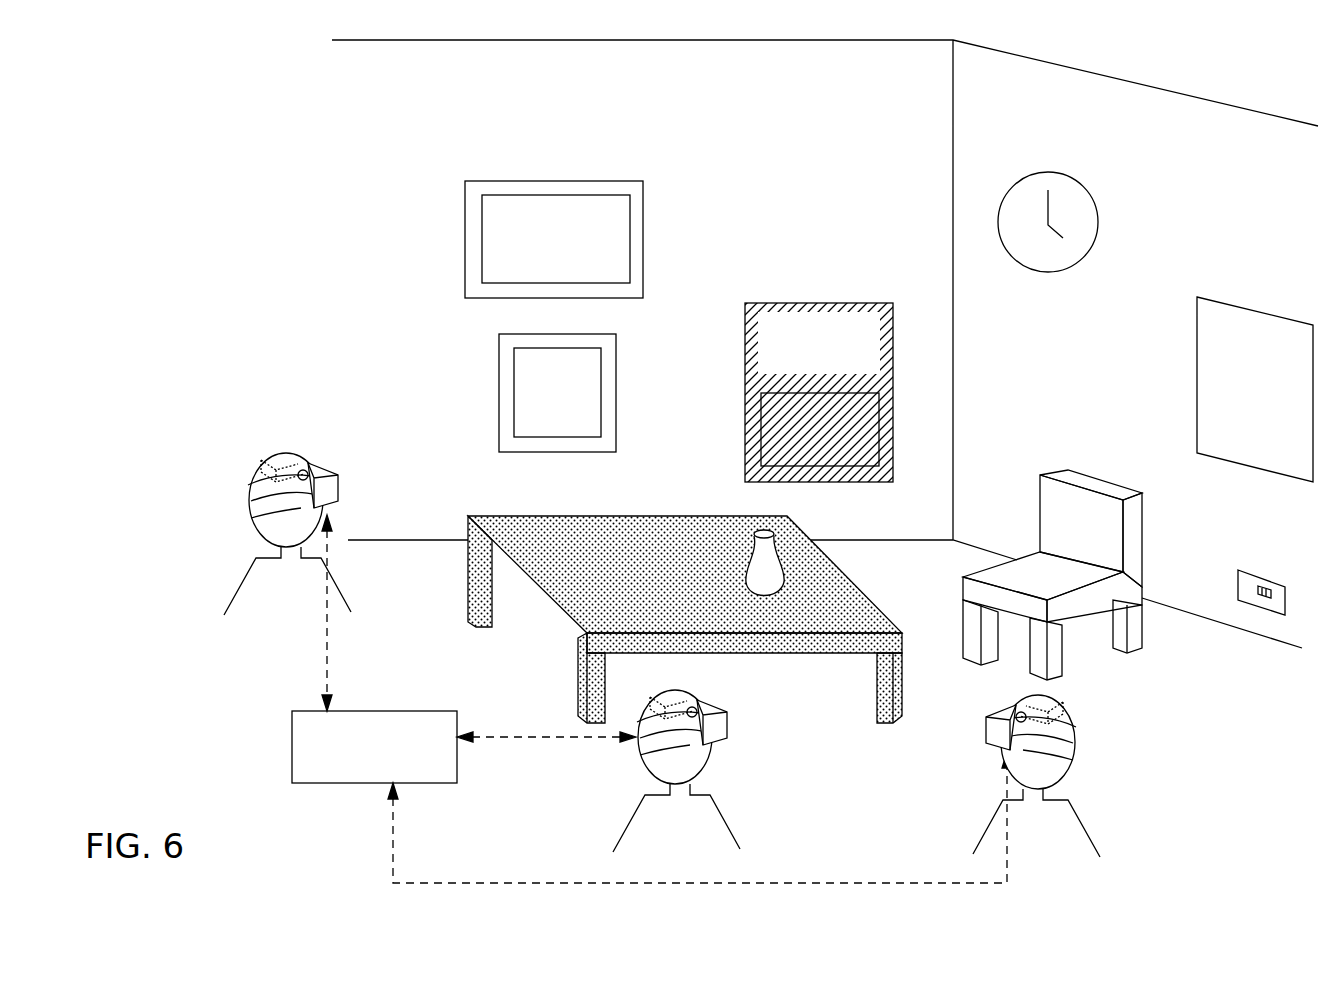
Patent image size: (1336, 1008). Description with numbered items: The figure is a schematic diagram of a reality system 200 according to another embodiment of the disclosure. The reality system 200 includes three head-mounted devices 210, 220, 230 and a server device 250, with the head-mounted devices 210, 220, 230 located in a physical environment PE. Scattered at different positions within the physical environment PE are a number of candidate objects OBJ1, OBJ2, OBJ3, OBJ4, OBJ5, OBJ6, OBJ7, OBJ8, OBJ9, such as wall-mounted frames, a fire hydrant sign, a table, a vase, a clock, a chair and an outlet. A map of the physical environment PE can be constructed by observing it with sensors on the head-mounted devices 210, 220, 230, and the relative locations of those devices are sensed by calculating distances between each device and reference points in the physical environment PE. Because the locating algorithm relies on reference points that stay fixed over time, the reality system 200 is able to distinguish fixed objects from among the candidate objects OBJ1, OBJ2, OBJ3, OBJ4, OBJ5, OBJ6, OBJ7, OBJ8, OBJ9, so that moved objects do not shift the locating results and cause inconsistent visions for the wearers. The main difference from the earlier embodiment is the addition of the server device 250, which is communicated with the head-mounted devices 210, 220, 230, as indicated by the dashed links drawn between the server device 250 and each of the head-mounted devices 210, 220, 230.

The reality system 200 is at (236, 196).
The head-mounted device 210 is at (987, 737).
The head-mounted device 220 is at (728, 725).
The head-mounted device 230 is at (340, 488).
The server device 250 is at (292, 737).
The physical environment PE is at (884, 104).
The candidate object OBJ1 is at (838, 303).
The candidate object OBJ2 is at (499, 393).
The candidate object OBJ3 is at (567, 181).
The candidate object OBJ4 is at (543, 623).
The candidate object OBJ5 is at (752, 547).
The candidate object OBJ6 is at (1095, 200).
The candidate object OBJ7 is at (1097, 480).
The candidate object OBJ8 is at (1243, 307).
The candidate object OBJ9 is at (1254, 577).